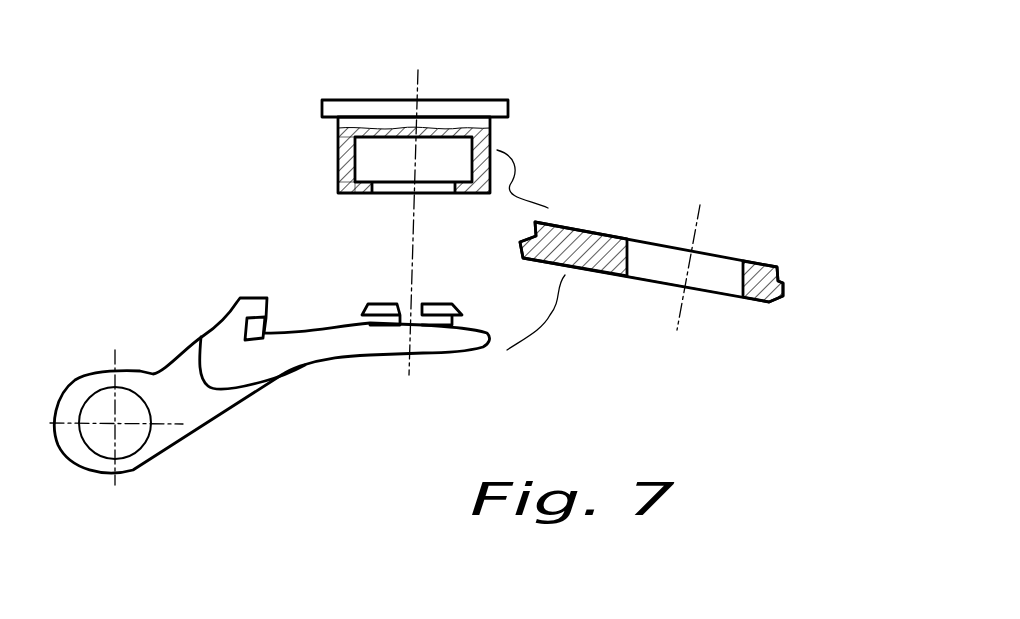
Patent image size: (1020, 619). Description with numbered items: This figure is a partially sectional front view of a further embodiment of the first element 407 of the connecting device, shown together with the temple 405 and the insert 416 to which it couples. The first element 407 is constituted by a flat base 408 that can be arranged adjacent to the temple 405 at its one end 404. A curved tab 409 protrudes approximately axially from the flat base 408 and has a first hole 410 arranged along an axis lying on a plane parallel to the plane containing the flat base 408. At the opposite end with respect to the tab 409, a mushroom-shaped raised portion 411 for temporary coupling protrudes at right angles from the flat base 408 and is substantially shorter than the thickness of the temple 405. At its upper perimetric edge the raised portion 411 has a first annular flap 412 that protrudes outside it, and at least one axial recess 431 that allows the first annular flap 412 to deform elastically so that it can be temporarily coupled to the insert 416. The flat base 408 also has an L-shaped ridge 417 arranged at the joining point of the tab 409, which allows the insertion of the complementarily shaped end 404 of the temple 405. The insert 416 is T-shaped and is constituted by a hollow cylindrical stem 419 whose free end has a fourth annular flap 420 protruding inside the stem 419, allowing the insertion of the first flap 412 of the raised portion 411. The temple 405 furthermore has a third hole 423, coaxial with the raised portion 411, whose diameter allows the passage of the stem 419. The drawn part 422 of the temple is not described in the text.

The end of the temple 404 is at (548, 213).
The temple 405 is at (768, 262).
The first element 407 is at (170, 207).
The flat base 408 is at (320, 343).
The curved tab 409 is at (97, 368).
The first hole 410 is at (107, 447).
The mushroom-shaped raised portion 411 is at (357, 305).
The first annular flap 412 is at (458, 306).
The insert 416 is at (478, 90).
The L-shaped ridge 417 is at (227, 303).
The hollow cylindrical stem 419 is at (338, 143).
The fourth annular flap 420 is at (340, 185).
The rod left end 422 is at (520, 233).
The third hole 423 is at (665, 267).
The axial recess 431 is at (404, 300).